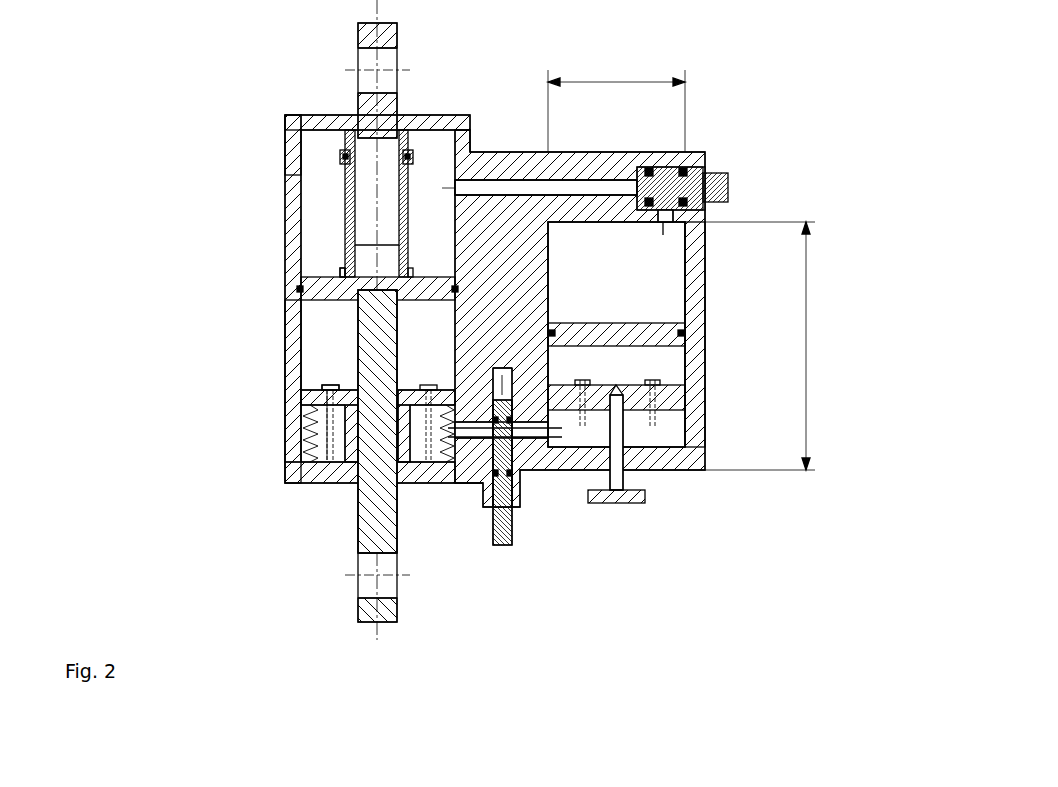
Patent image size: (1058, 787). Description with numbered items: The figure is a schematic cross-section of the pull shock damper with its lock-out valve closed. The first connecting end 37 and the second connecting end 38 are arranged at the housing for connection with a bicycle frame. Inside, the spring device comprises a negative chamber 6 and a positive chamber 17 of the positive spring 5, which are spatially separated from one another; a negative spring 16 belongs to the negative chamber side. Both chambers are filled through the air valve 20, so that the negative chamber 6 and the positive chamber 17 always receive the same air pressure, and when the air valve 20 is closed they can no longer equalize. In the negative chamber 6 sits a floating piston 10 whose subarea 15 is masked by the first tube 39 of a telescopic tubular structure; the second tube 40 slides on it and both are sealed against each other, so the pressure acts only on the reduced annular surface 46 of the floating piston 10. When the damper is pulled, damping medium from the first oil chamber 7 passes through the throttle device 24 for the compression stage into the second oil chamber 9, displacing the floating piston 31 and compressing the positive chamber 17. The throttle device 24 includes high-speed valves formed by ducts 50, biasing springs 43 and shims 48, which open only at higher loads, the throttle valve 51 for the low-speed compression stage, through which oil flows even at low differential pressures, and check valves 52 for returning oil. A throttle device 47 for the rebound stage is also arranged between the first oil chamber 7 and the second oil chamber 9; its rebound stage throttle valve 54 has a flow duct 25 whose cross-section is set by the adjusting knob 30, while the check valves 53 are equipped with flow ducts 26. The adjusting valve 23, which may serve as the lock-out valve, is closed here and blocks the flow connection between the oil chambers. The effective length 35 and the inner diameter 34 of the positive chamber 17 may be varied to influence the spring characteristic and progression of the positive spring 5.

The positive spring 5 is at (680, 257).
The negative chamber 6 is at (285, 221).
The first oil chamber 7 is at (310, 356).
The second oil chamber 9 is at (683, 368).
The floating piston 10 is at (300, 290).
The subarea 15 is at (390, 250).
The negative spring 16 is at (300, 178).
The positive chamber 17 is at (682, 297).
The air valve 20 is at (735, 165).
The adjusting valve 23 is at (510, 550).
The throttle device 24 is at (300, 398).
The flow duct 25 is at (628, 418).
The flow duct 26 is at (658, 418).
The adjusting knob 30 is at (612, 505).
The floating piston 31 is at (687, 335).
The inner diameter 34 is at (616, 106).
The effective length 35 is at (760, 346).
The first connecting end 37 is at (408, 30).
The second connecting end 38 is at (398, 625).
The first tube 39 is at (350, 140).
The second tube 40 is at (410, 180).
The biasing spring 43 is at (305, 450).
The annular surface 46 is at (318, 276).
The throttle device 47 is at (705, 412).
The shim 48 is at (320, 430).
The duct 50 is at (312, 392).
The low-speed compression throttle valve 51 is at (350, 388).
The check valve 52 is at (428, 386).
The check valve 53 is at (582, 378).
The rebound stage throttle valve 54 is at (618, 384).